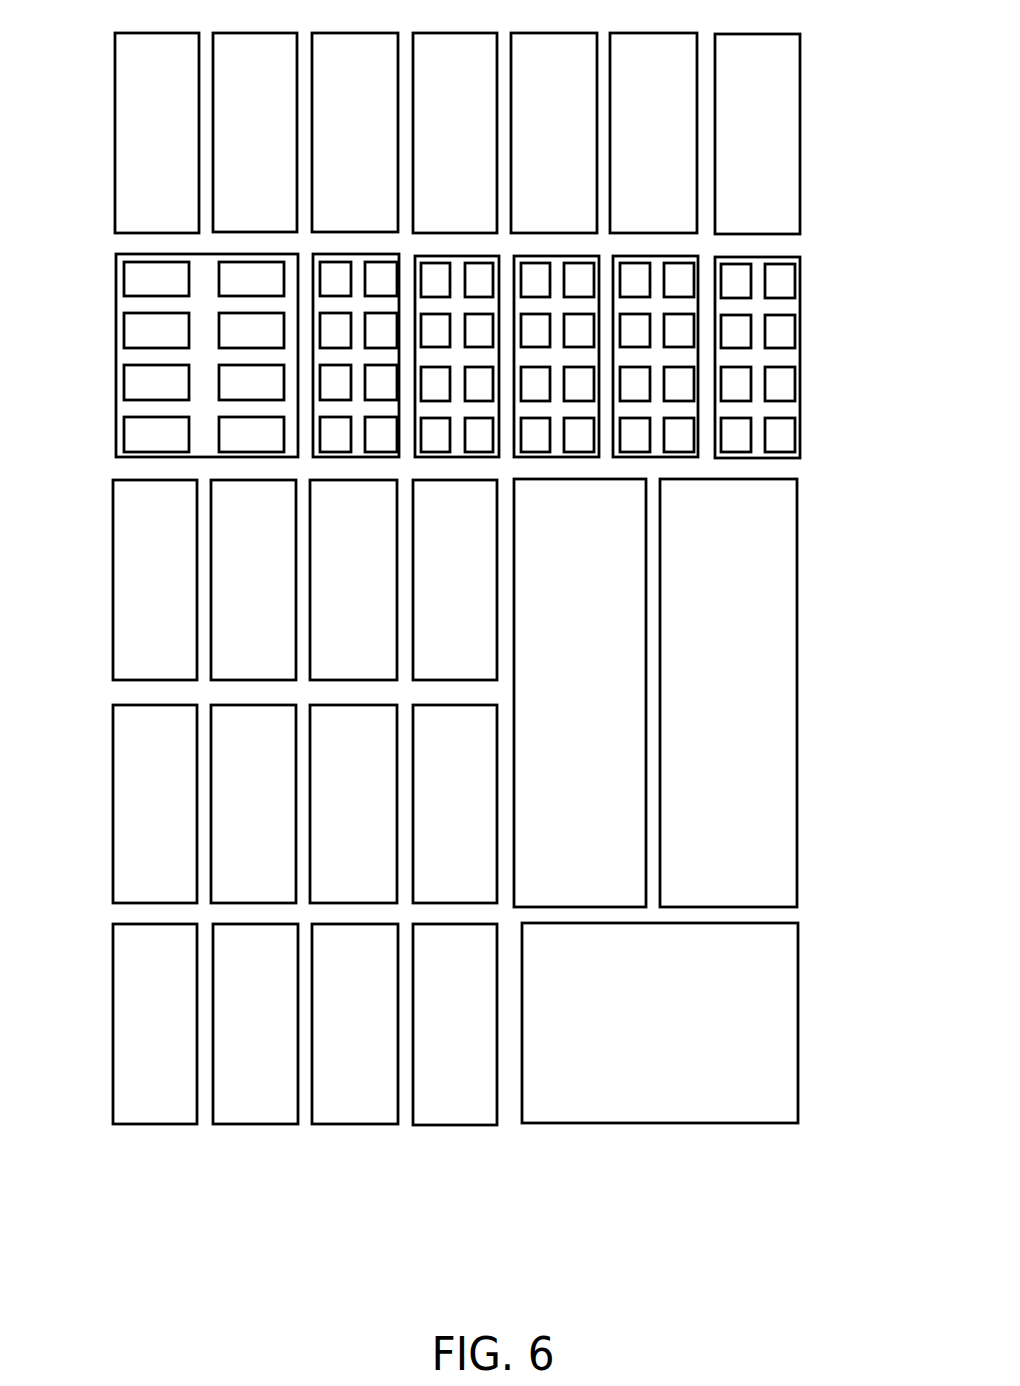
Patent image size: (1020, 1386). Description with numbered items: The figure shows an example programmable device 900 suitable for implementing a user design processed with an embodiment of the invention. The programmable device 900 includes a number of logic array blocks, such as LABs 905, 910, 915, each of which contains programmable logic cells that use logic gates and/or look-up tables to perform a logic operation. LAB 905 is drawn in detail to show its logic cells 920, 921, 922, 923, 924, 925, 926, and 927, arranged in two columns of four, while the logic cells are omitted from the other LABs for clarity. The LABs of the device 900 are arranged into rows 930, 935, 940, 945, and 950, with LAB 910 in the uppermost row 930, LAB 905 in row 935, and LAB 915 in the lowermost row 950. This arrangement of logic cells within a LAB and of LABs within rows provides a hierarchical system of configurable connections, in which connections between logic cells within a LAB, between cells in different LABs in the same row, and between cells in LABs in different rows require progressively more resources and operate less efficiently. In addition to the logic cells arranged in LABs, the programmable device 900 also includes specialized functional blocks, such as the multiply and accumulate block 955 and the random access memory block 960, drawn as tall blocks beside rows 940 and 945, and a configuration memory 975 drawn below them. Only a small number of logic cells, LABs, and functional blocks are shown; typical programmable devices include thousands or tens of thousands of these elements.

The programmable device 900 is at (464, 622).
The logic array block 905 is at (169, 355).
The logic array block 910 is at (157, 133).
The logic array block 915 is at (449, 1093).
The logic cell 920 is at (156, 434).
The logic cell 921 is at (251, 434).
The logic cell 922 is at (156, 382).
The logic cell 923 is at (251, 382).
The logic cell 924 is at (156, 330).
The logic cell 925 is at (251, 330).
The logic cell 926 is at (156, 279).
The logic cell 927 is at (251, 279).
The row 930 is at (508, 128).
The row 935 is at (470, 360).
The row 940 is at (130, 470).
The row 945 is at (130, 699).
The row 950 is at (275, 1062).
The multiply and accumulate block 955 is at (580, 693).
The random access memory block 960 is at (728, 693).
The configuration memory 975 is at (660, 1023).